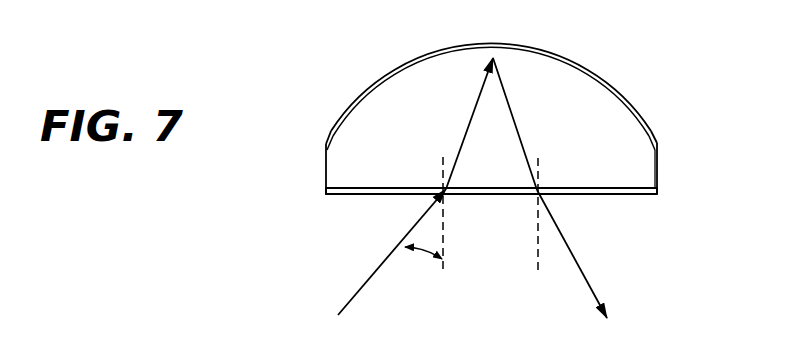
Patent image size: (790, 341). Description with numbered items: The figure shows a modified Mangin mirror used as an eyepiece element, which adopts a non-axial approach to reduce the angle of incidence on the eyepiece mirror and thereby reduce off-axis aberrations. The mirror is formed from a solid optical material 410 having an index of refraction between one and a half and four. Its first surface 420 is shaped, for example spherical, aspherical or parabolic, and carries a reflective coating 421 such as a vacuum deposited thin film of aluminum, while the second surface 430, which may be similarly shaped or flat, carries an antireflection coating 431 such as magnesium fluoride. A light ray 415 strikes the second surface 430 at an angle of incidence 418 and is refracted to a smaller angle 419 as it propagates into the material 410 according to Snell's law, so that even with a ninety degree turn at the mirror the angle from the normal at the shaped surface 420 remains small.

The solid optical material 410 is at (372, 176).
The light ray 415 is at (357, 292).
The angle of incidence 418 is at (418, 255).
The angle of refraction 419 is at (443, 166).
The first surface 420 is at (538, 54).
The reflective coating 421 is at (630, 104).
The second surface 430 is at (625, 197).
The antireflection coating 431 is at (658, 191).